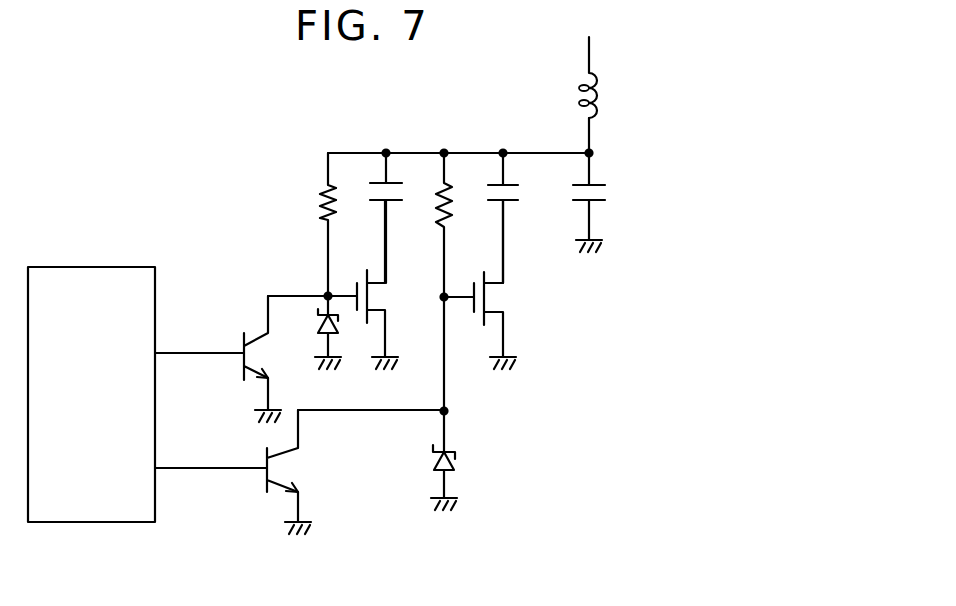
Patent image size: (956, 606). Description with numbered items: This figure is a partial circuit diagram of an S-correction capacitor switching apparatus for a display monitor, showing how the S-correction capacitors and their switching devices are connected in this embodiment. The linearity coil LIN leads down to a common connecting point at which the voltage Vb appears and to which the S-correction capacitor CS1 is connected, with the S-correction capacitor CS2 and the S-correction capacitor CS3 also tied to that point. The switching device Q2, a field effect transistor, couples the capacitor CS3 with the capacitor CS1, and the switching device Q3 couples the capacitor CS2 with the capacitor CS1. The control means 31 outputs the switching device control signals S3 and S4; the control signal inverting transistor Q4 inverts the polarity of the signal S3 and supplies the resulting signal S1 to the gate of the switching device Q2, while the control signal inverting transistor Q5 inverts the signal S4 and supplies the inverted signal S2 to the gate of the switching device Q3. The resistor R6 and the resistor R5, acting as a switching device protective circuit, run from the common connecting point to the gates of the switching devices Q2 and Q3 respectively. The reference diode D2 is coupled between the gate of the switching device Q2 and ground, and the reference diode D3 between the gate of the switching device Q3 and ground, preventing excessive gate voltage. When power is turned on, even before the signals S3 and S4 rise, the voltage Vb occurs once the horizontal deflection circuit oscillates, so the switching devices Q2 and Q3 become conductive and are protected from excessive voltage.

The control means 31 is at (122, 266).
The switching device control signal S1 is at (300, 285).
The switching device control signal S2 is at (373, 400).
The switching device control signal S3 is at (199, 341).
The switching device control signal S4 is at (211, 454).
The resistor R5 is at (461, 282).
The resistor R6 is at (302, 224).
The S-correction capacitor CS1 is at (612, 202).
The S-correction capacitor CS2 is at (524, 218).
The S-correction capacitor CS3 is at (403, 196).
The switching device Q2 is at (374, 284).
The switching device Q3 is at (492, 284).
The control signal inverting transistor Q4 is at (274, 359).
The control signal inverting transistor Q5 is at (300, 472).
The reference diode D2 is at (308, 332).
The reference diode D3 is at (462, 460).
The linearity coil LIN is at (558, 77).
The voltage Vb is at (609, 144).